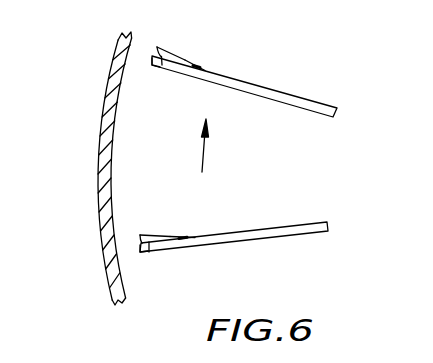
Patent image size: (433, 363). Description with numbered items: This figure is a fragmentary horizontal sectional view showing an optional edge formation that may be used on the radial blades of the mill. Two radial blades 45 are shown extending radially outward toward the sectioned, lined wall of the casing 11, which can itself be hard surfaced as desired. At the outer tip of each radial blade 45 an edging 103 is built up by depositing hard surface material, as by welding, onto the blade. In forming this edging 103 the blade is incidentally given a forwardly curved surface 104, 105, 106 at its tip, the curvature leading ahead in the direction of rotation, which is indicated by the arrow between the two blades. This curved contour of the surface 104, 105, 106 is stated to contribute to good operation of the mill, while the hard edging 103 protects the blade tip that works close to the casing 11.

The casing 11 is at (102, 205).
The radial blade 45 is at (292, 98).
The edging 103 is at (156, 66).
The forwardly curved surface 104 is at (159, 36).
The forwardly curved surface 105 is at (174, 56).
The forwardly curved surface 106 is at (200, 67).